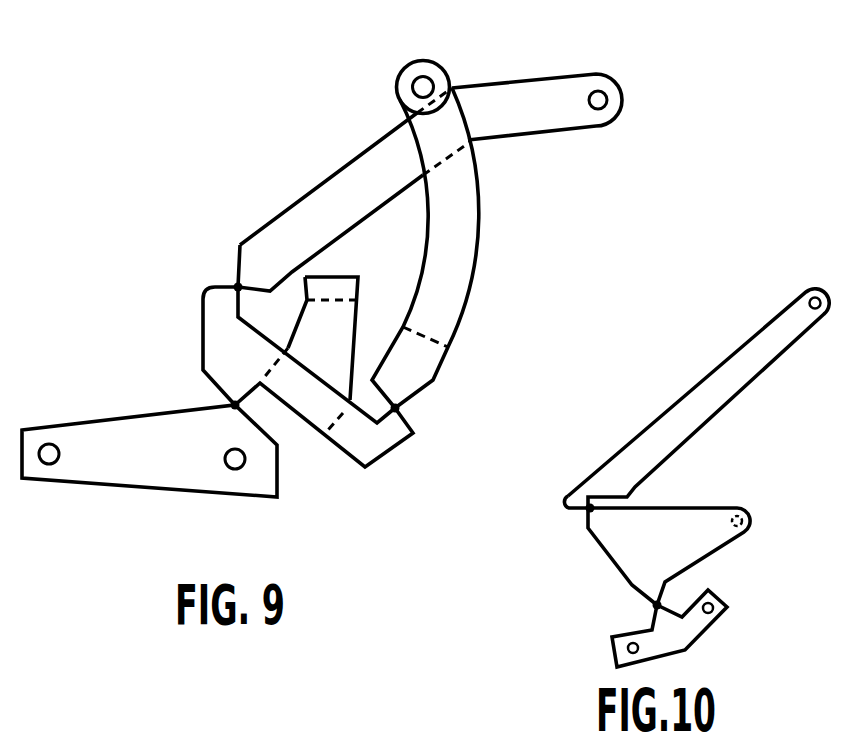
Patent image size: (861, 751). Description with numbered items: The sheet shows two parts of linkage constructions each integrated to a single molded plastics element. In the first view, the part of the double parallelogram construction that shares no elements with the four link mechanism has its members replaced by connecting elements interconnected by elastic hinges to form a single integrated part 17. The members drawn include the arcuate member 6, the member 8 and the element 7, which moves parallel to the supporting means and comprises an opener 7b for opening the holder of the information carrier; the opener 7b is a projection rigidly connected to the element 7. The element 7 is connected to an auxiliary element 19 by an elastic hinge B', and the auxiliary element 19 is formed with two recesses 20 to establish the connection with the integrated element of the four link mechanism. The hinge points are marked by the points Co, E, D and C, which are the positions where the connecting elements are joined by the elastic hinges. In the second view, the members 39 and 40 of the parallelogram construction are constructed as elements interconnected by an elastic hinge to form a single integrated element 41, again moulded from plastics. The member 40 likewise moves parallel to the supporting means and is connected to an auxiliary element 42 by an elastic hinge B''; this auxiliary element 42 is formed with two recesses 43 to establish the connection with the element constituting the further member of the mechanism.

In FIG. 9, the member of the double parallelogram construction 6 is at (473, 297).
In FIG. 9, the element moving parallel to the supporting means 7 is at (203, 327).
In FIG. 9, the opener 7b is at (358, 287).
In FIG. 9, the member of the double parallelogram construction 8 is at (522, 78).
In FIG. 9, the integrated part 17 is at (292, 272).
In FIG. 9, the auxiliary element 19 is at (145, 488).
In FIG. 9, the recesses 20 is at (237, 508).
In FIG. 10, the member of the parallelogram construction 39 is at (758, 362).
In FIG. 10, the member of the parallelogram construction 40 is at (680, 522).
In FIG. 10, the integrated element 41 is at (660, 402).
In FIG. 10, the auxiliary element 42 is at (710, 622).
In FIG. 10, the recesses 43 is at (628, 648).
In FIG. 9, the pivot Co is at (421, 84).
In FIG. 9, the pivot E is at (603, 97).
In FIG. 9, the pivot D is at (238, 287).
In FIG. 9, the elastic hinge B' is at (203, 390).
In FIG. 9, the pivot C is at (400, 408).
In FIG. 10, the elastic hinge B'' is at (631, 608).